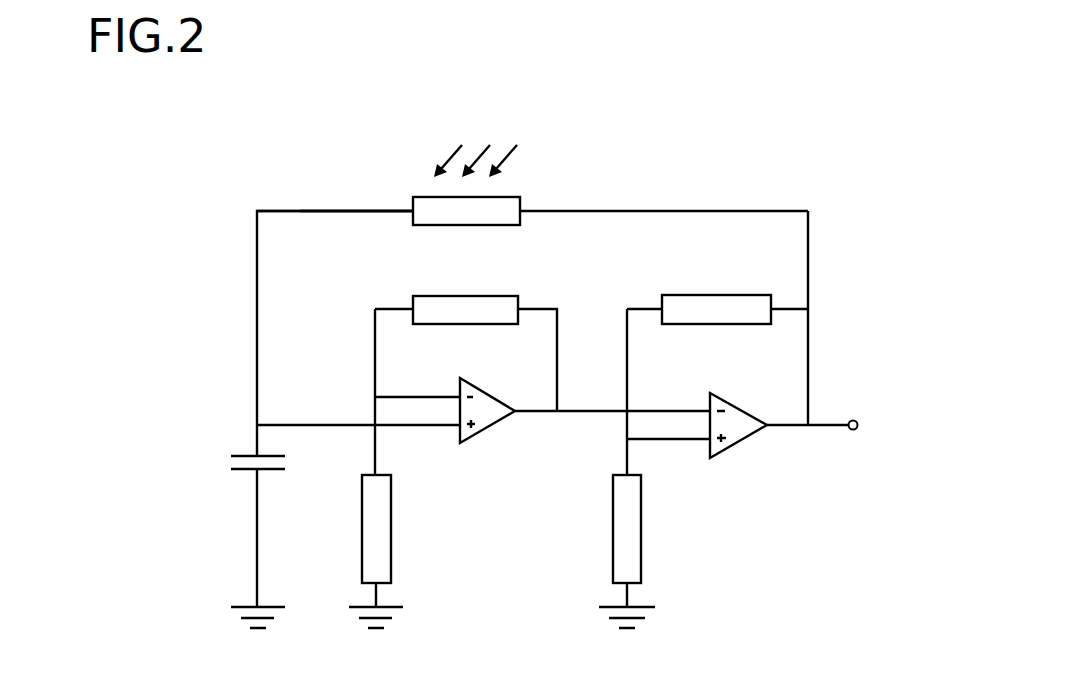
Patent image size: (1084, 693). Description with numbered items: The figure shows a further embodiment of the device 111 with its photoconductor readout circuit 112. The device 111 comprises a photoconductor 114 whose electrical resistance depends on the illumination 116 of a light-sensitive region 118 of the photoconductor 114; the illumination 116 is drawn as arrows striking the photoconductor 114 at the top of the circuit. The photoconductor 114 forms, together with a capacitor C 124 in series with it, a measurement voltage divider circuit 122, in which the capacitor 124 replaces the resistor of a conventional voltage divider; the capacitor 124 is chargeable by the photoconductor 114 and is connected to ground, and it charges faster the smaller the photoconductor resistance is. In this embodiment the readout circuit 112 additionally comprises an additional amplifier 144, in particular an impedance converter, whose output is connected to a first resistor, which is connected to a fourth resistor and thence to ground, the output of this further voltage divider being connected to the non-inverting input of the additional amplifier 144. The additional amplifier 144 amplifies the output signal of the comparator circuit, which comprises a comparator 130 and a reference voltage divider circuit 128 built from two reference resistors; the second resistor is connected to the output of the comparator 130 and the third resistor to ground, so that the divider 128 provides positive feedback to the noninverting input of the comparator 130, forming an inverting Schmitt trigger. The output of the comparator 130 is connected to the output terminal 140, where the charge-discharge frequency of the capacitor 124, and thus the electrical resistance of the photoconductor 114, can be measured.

The device 111 is at (335, 127).
The photoconductor readout circuit 112 is at (336, 163).
The photoconductor 114 is at (420, 197).
The illumination 116 is at (512, 156).
The light-sensitive region 118 is at (504, 197).
The measurement voltage divider circuit 122 is at (197, 213).
The capacitor 124 is at (232, 485).
The reference voltage divider circuit 128 is at (651, 269).
The comparator 130 is at (746, 458).
The output terminal 140 is at (857, 418).
The additional amplifier 144 is at (481, 453).